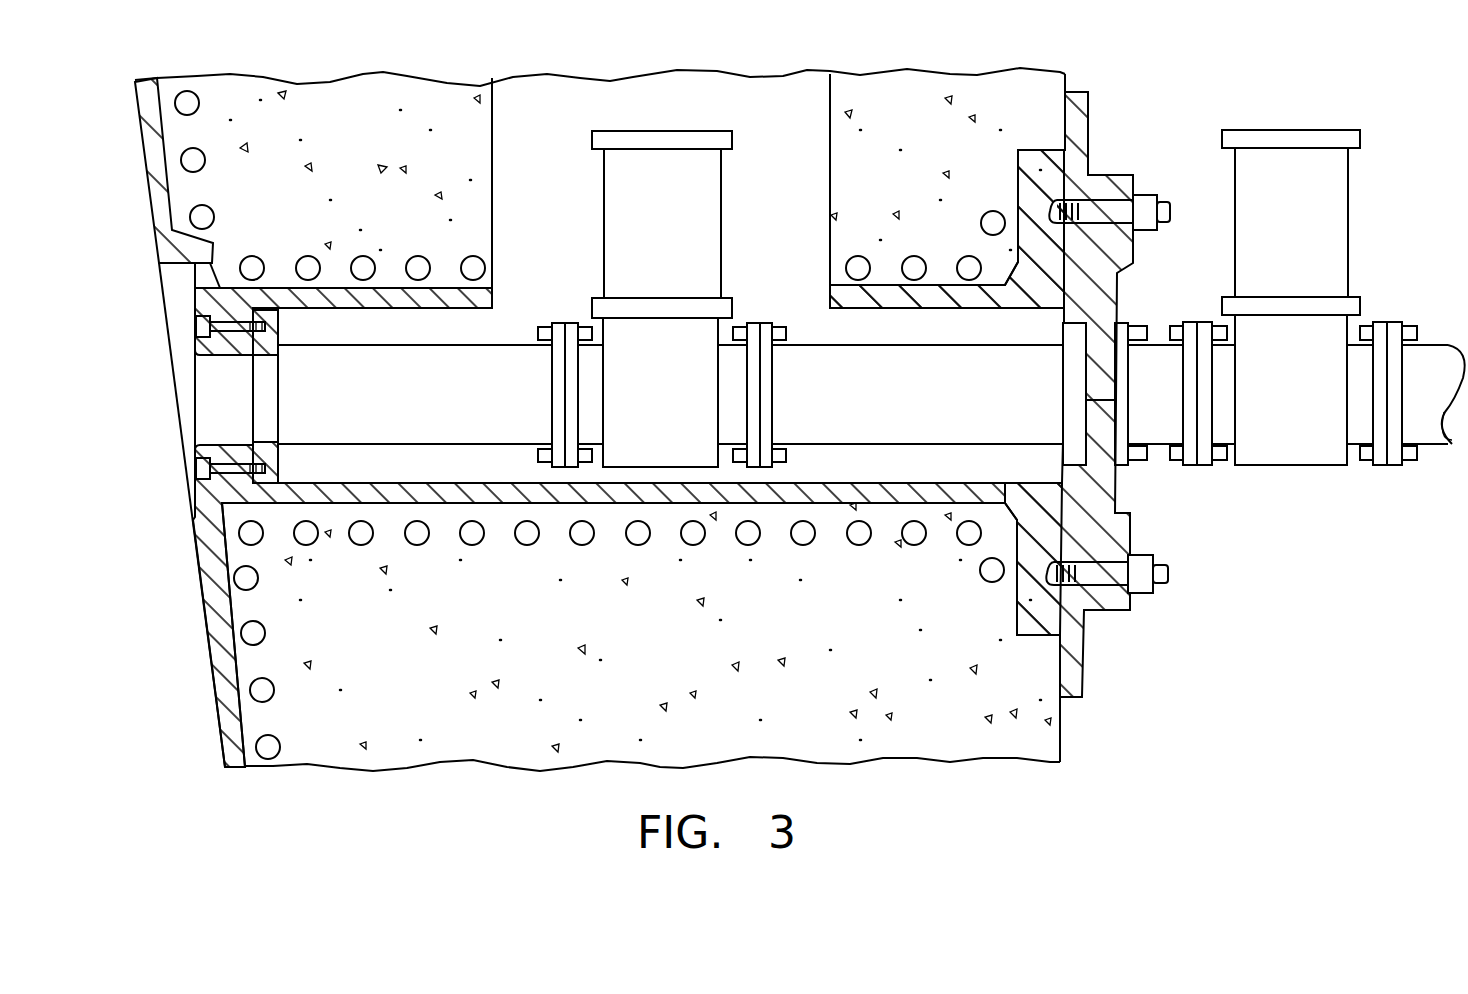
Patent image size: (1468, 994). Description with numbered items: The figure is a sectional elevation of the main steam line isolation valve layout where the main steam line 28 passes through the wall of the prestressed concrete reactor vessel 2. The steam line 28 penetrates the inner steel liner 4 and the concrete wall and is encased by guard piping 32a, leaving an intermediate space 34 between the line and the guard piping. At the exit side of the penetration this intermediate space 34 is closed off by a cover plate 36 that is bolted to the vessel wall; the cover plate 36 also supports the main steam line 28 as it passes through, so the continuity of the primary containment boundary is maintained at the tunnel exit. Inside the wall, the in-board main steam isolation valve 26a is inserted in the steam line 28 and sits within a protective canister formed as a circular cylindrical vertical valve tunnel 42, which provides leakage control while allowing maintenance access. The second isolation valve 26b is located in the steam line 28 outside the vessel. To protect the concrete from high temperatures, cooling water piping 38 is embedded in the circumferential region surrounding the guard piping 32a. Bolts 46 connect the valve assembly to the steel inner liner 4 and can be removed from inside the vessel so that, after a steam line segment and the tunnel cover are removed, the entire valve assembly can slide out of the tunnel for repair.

The penstock structure 2 is at (1062, 738).
The inner steel liner 4 is at (218, 688).
The in-board MSIV 26a is at (722, 178).
The MSIV 26b is at (1352, 218).
The main steam line 28 is at (508, 340).
The guard piping 32a is at (904, 306).
The intermediate space 34 is at (935, 474).
The cover plate 36 is at (1128, 240).
The cooling water piping 38 is at (639, 520).
The valve tunnel 42 is at (803, 119).
The bolts 46 is at (240, 462).